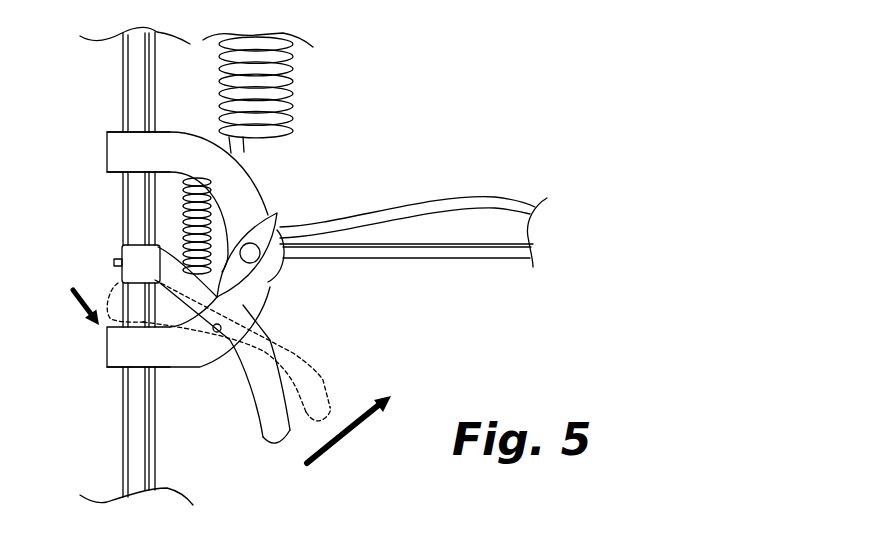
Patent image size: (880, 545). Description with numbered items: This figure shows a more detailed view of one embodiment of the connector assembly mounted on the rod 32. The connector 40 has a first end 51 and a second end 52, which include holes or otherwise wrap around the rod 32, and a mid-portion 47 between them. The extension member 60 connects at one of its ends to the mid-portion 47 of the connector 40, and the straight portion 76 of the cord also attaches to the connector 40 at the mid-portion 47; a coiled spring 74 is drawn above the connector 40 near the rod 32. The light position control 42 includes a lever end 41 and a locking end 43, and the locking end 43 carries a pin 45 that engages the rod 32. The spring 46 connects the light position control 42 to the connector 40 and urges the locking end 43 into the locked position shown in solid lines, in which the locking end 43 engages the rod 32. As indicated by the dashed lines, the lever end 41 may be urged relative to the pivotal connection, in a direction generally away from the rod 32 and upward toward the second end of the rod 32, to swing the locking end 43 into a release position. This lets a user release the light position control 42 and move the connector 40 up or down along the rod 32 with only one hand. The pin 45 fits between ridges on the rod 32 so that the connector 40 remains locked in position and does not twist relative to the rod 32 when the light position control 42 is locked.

The rod 32 is at (140, 77).
The connector 40 is at (260, 190).
The lever end 41 is at (277, 432).
The light position control 42 is at (262, 375).
The locking end 43 is at (122, 250).
The pin 45 is at (114, 263).
The spring 46 is at (183, 210).
The mid-portion 47 is at (262, 307).
The first end 51 is at (110, 367).
The second end 52 is at (127, 153).
The extension member 60 is at (473, 253).
The spring 74 is at (288, 82).
The straight portion 76 is at (465, 207).